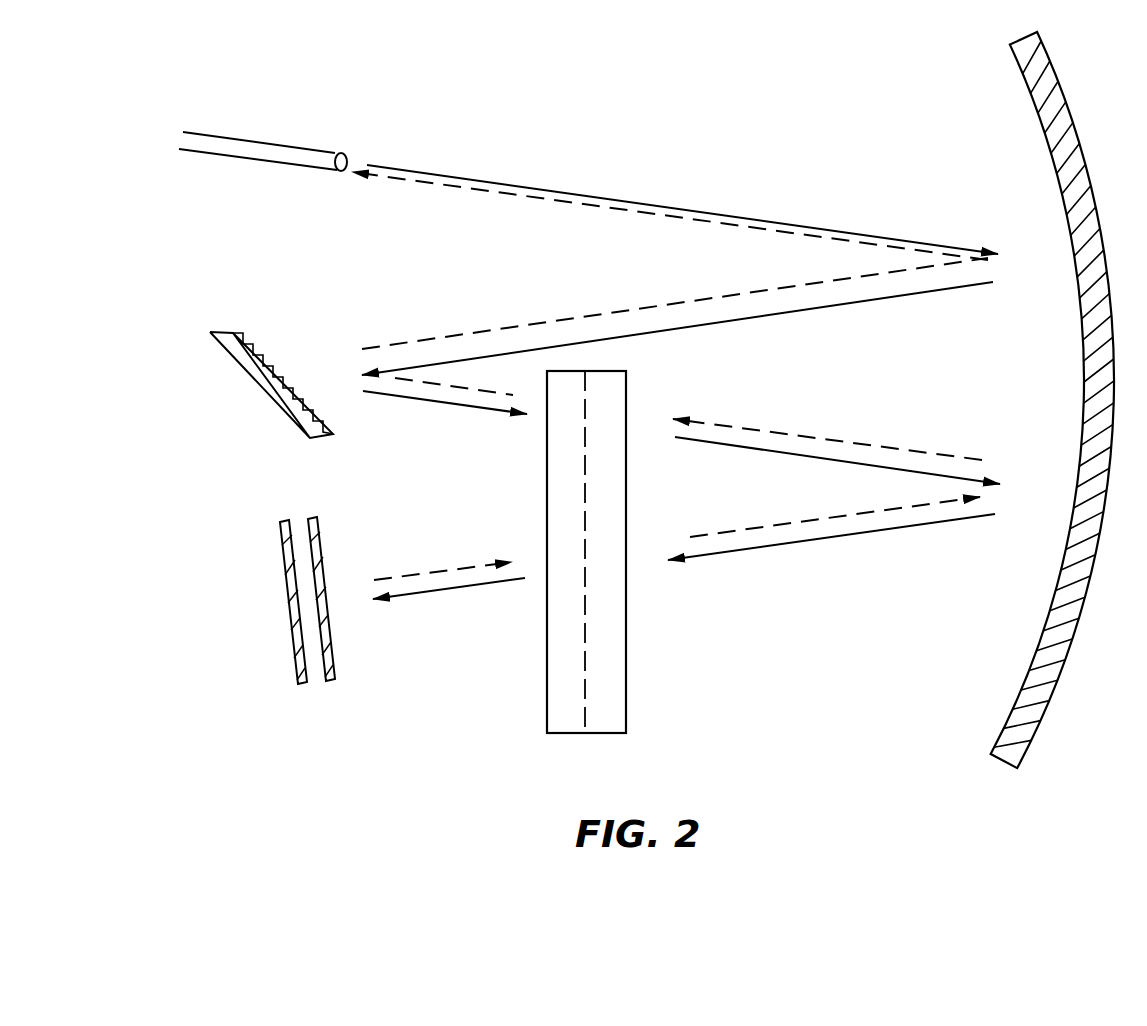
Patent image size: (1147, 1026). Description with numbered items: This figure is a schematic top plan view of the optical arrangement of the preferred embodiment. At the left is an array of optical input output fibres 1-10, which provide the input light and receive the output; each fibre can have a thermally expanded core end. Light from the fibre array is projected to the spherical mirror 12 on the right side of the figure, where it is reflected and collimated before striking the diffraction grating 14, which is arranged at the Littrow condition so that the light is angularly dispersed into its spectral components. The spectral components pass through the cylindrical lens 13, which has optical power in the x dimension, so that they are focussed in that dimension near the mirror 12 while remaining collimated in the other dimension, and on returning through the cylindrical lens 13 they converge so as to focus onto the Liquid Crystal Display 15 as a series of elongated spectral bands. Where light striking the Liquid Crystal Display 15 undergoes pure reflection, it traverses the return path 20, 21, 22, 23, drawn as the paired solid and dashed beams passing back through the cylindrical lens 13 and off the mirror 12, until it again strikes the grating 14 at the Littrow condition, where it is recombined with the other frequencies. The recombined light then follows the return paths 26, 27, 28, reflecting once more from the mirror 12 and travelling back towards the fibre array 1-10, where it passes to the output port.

The optical input output fibres 1-10 is at (326, 153).
The spherical mirror 12 is at (1072, 632).
The cylindrical lens 13 is at (626, 708).
The diffraction grating 14 is at (310, 438).
The Liquid Crystal Display 15 is at (334, 672).
The return path 20 is at (436, 573).
The return path 21 is at (793, 525).
The return path 22 is at (808, 437).
The return path 23 is at (465, 387).
The return path 26 is at (450, 337).
The return path 27 is at (781, 291).
The return path 28 is at (485, 190).